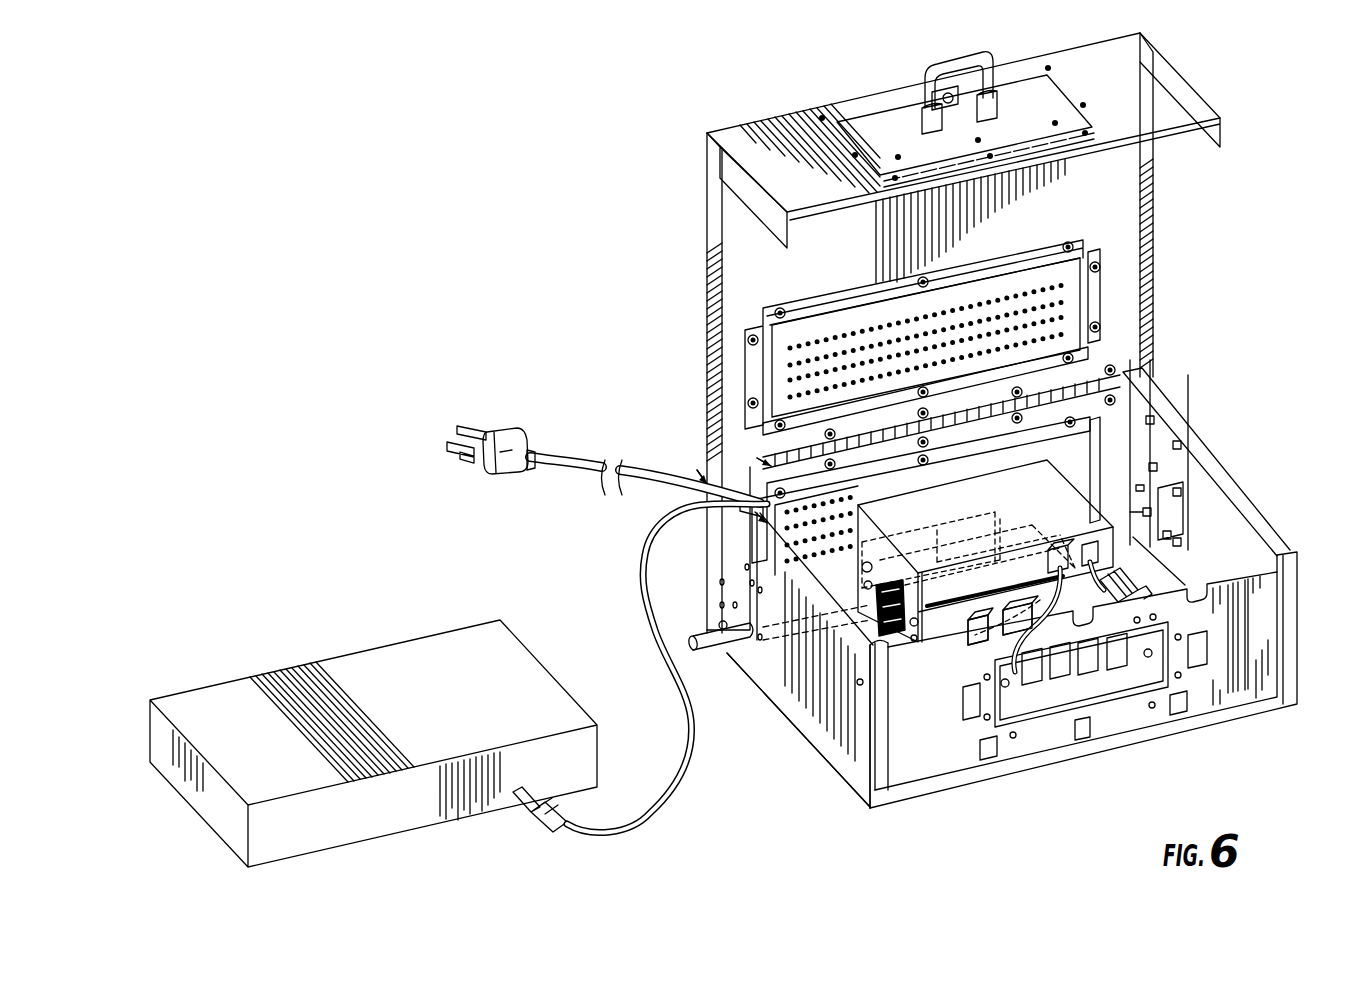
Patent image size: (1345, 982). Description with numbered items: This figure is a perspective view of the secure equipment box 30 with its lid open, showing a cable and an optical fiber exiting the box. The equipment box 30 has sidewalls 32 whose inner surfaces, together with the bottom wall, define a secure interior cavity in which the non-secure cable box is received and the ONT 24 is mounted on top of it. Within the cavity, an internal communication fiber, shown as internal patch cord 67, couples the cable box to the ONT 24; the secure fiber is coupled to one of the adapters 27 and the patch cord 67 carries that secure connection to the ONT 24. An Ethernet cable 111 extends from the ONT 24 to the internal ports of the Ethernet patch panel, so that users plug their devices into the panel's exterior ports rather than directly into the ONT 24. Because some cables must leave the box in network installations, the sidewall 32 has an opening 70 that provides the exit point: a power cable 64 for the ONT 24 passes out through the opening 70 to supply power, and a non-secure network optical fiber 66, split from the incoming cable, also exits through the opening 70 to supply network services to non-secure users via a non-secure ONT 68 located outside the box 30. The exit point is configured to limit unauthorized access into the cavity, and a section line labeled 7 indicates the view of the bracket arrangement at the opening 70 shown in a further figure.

The secure equipment box 30 is at (1241, 305).
The sidewalls 32 is at (853, 745).
The section line 7- 7 is at (727, 459).
The ONT 24 is at (1073, 495).
The adapters 27 is at (1010, 640).
The internal patch cord 67 is at (1053, 610).
The Ethernet cable 111 is at (1107, 557).
The opening 70 is at (757, 625).
The power cable 64 is at (565, 470).
The non-secure ONT 68 is at (388, 683).
The non-secure network optical fiber 66 is at (640, 818).